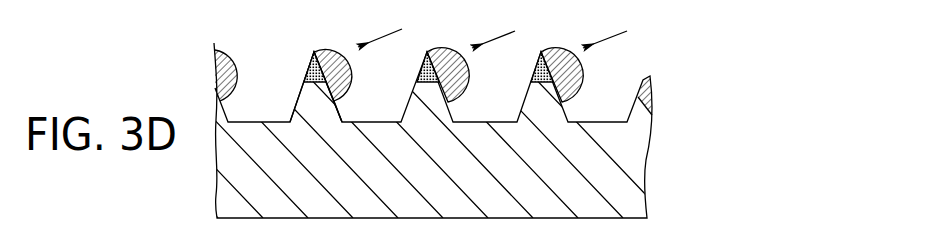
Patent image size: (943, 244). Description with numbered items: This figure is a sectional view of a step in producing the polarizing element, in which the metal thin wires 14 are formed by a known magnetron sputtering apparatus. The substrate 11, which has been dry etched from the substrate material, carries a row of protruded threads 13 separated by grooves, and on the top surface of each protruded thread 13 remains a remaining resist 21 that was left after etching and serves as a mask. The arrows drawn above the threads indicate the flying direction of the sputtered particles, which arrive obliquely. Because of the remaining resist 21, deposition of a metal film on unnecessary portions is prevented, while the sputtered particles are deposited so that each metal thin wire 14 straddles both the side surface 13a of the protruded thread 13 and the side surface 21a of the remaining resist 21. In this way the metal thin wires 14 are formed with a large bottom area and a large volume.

The substrate 11 is at (628, 172).
The protruded thread 13 is at (312, 105).
The side surface of the protruded thread 13a is at (338, 112).
The metal thin wire 14 is at (578, 85).
The remaining resist 21 is at (313, 73).
The side surface of the remaining resist 21a is at (325, 52).